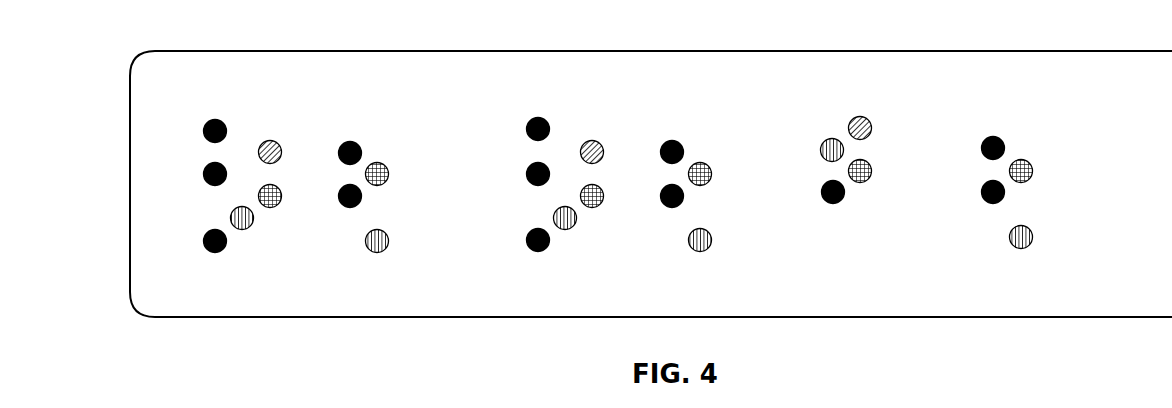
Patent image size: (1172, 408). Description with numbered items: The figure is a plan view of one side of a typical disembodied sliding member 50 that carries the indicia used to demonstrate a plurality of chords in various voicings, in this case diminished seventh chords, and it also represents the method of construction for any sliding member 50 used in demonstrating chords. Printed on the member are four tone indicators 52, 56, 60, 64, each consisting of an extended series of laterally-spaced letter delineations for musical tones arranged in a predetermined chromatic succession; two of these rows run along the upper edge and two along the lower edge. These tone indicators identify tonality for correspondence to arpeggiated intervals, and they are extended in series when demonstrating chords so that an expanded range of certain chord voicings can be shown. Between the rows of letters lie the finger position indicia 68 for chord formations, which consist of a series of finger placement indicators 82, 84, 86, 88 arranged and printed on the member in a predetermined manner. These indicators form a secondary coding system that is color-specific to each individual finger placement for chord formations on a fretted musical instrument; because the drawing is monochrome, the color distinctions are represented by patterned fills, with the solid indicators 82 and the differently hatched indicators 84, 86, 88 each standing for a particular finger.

The sliding member 50 is at (1117, 64).
The tone indicator 52 is at (212, 69).
The tone indicator 56 is at (210, 97).
The tone indicator 60 is at (214, 278).
The tone indicator 64 is at (215, 312).
The finger position indicia 68 is at (1005, 266).
The finger placement indicator 82 is at (527, 133).
The finger placement indicator 84 is at (567, 230).
The finger placement indicator 86 is at (601, 187).
The finger placement indicator 88 is at (606, 146).